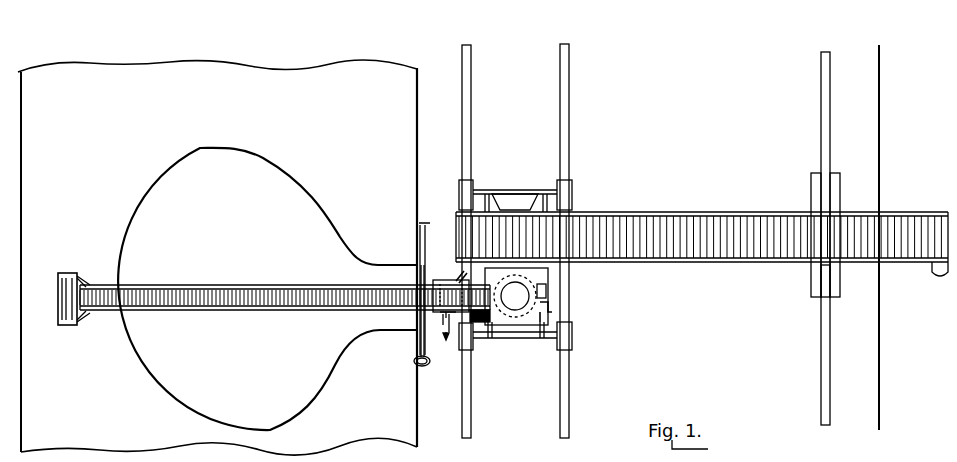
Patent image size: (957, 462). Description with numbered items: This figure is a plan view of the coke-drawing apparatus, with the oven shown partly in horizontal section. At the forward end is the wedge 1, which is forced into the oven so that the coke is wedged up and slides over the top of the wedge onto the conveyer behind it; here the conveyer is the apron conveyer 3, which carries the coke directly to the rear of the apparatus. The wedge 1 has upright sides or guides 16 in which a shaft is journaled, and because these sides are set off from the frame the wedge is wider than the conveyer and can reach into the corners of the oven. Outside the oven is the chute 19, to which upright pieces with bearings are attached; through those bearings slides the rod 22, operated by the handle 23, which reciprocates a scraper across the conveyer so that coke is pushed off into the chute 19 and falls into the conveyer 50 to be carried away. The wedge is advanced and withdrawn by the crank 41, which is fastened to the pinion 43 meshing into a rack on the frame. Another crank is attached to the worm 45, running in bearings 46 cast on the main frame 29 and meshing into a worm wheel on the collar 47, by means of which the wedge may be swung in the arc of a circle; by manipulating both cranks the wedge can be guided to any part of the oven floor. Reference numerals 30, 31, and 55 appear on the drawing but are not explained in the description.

The wedge 1 is at (58, 330).
The apron conveyer 3 is at (208, 286).
The upright sides or guides 16 is at (86, 283).
The chute 19 is at (425, 253).
The rod 22 is at (418, 340).
The handle 23 is at (427, 367).
The main frame 29 is at (550, 307).
The clamp block 30 is at (573, 338).
The guide post 31 is at (570, 386).
The crank 41 is at (447, 337).
The pinion 43 is at (440, 326).
The worm 45 is at (548, 292).
The bearings 46 is at (548, 312).
The collar 47 is at (519, 311).
The conveyer 50 is at (690, 233).
The lever 55 is at (460, 276).